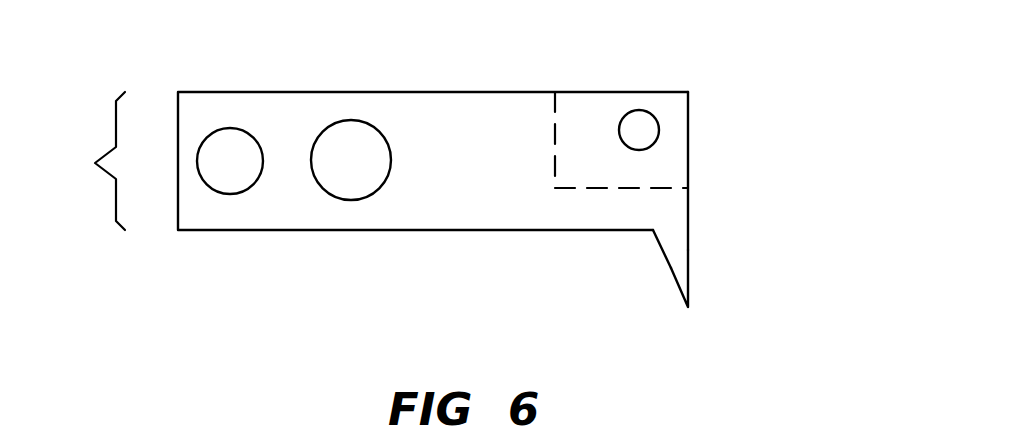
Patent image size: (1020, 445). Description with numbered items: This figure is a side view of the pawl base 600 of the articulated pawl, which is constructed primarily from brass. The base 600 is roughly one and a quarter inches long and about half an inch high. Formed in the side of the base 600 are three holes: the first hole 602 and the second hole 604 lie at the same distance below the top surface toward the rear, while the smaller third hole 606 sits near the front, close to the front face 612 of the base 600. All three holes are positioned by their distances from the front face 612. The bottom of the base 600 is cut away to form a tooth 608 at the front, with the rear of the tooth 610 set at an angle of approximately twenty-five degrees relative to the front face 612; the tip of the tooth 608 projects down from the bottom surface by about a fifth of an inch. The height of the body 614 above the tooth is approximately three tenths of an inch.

The pawl base 600 is at (708, 70).
The first hole 602 is at (207, 138).
The second hole 604 is at (324, 132).
The third hole 606 is at (621, 119).
The tooth 608 is at (678, 262).
The rear of the tooth 610 is at (660, 249).
The front face 612 is at (690, 249).
The body 614 is at (83, 161).